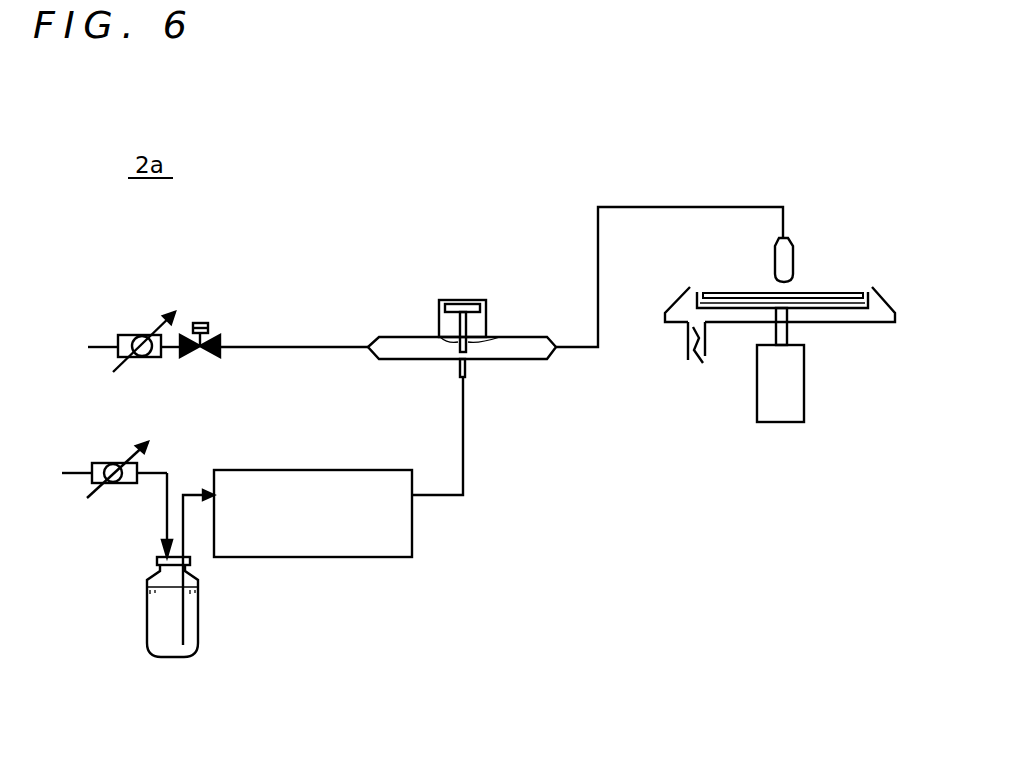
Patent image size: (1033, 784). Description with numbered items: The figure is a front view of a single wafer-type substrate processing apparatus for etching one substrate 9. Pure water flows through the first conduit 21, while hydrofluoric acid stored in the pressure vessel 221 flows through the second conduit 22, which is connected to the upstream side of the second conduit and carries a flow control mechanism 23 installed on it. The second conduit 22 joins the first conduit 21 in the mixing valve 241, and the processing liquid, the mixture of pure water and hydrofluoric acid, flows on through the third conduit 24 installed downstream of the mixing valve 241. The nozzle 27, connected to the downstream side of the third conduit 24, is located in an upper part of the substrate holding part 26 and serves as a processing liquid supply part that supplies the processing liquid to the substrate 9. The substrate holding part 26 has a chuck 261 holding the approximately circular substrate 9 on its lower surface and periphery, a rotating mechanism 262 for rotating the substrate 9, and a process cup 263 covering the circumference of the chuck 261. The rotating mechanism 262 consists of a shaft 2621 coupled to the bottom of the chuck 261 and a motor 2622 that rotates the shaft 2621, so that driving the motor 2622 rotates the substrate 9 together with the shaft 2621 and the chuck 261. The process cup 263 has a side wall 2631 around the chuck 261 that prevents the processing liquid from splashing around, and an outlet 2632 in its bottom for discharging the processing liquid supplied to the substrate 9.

The first conduit 21 is at (279, 349).
The second conduit 22 is at (445, 495).
The flow control mechanism 23 is at (360, 557).
The third conduit 24 is at (598, 260).
The mixing valve 241 is at (507, 360).
The pressure vessel 221 is at (198, 610).
The nozzle 27 is at (793, 255).
The substrate 9 is at (810, 295).
The substrate holding part 26 is at (767, 533).
The chuck 261 is at (868, 300).
The rotating mechanism 262 is at (833, 475).
The shaft 2621 is at (788, 330).
The motor 2622 is at (780, 422).
The process cup 263 is at (670, 420).
The side wall 2631 is at (660, 318).
The outlet 2632 is at (700, 347).